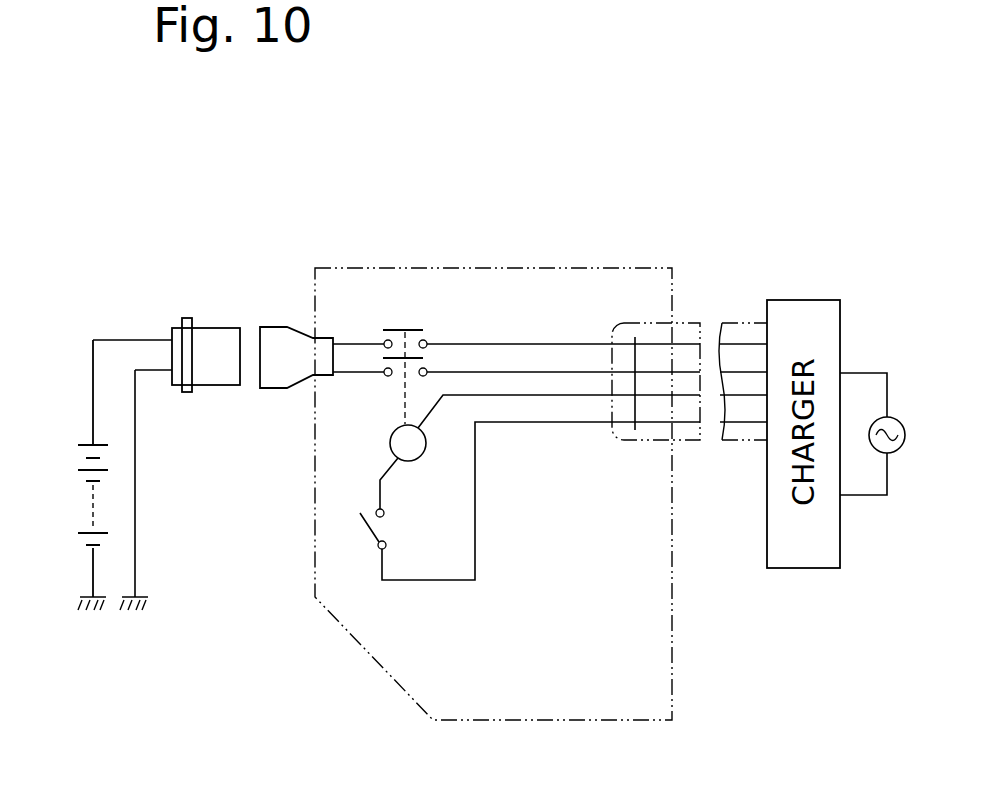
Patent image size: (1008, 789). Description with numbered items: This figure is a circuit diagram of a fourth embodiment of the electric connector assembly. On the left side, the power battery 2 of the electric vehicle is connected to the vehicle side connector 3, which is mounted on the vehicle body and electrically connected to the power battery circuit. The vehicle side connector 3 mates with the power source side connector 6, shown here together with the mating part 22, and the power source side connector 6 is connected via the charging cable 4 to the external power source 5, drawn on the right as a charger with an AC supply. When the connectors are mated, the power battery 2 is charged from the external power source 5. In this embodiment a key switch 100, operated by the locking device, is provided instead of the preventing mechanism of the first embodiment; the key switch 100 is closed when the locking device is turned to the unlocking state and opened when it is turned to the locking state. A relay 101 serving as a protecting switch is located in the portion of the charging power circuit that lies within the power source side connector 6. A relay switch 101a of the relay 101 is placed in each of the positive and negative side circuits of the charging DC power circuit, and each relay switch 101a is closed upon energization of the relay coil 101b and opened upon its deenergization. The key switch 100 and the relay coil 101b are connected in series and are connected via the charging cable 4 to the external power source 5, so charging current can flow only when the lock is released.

The power battery 2 is at (72, 478).
The vehicle side connector 3 is at (217, 328).
The connector 22 is at (287, 327).
The key switch 100 is at (368, 540).
The relay 101 is at (369, 440).
The relay switch 101a is at (413, 313).
The relay coil 101b is at (415, 462).
The power source side connector 6 is at (635, 267).
The charging cable 4 is at (688, 323).
The external power source 5 is at (895, 455).